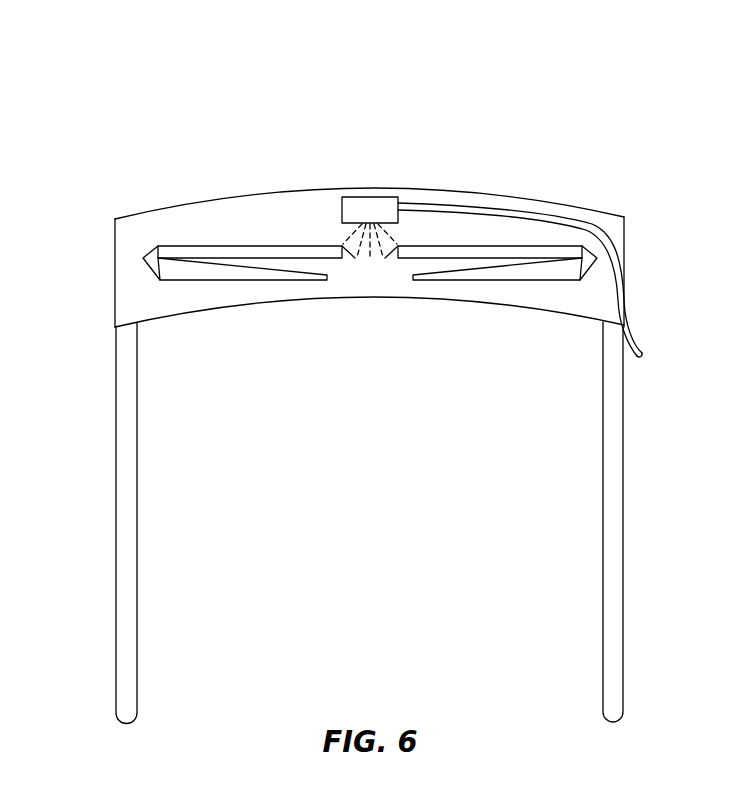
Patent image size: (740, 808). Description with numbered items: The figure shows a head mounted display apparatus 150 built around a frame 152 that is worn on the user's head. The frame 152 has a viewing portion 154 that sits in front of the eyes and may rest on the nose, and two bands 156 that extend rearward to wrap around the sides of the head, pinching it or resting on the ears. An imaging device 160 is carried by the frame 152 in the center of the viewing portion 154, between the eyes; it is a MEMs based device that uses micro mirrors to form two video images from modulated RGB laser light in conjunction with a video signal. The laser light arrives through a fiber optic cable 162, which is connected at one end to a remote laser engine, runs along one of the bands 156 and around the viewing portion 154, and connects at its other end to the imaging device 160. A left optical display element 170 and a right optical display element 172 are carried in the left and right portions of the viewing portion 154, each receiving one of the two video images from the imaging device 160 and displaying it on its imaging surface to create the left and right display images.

The head mounted display apparatus 150 is at (251, 80).
The frame 152 is at (660, 253).
The viewing portion 154 is at (115, 248).
The bands 156 is at (116, 492).
The imaging device 160 is at (363, 207).
The fiber optic cable 162 is at (525, 212).
The left optical display element 170 is at (457, 237).
The right optical display element 172 is at (243, 233).